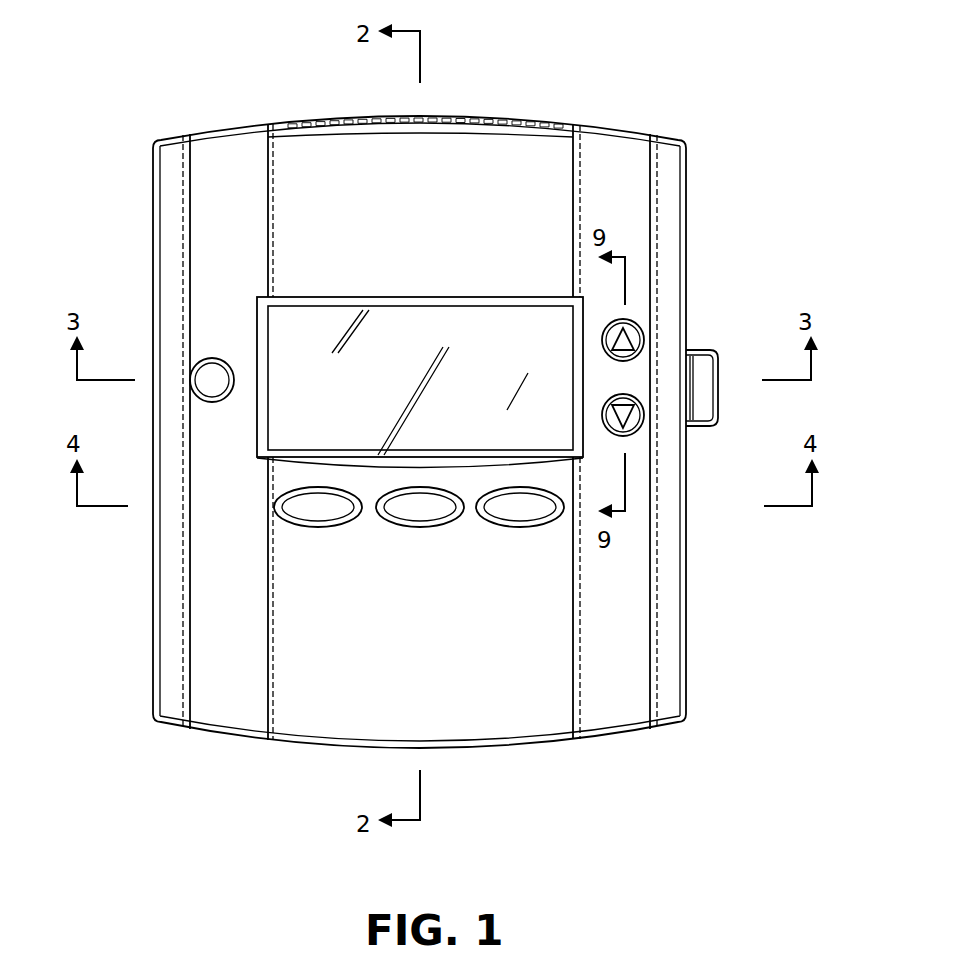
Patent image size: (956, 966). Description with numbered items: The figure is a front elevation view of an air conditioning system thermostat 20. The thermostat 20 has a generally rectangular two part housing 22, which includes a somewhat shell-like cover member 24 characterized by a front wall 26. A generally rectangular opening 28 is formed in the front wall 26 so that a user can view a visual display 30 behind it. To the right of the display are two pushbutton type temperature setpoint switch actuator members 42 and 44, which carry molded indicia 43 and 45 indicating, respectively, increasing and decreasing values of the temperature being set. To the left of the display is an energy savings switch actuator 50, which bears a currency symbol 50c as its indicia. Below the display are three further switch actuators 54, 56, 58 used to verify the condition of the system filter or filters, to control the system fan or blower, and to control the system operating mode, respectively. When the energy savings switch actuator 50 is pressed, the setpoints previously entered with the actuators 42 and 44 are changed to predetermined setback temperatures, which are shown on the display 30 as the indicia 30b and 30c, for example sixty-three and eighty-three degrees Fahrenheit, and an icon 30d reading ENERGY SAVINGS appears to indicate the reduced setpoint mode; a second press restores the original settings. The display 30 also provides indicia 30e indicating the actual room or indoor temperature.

The thermostat 20 is at (710, 153).
The housing 22 is at (635, 731).
The cover member 24 is at (239, 706).
The front wall 26 is at (620, 658).
The opening 28 is at (440, 320).
The visual display 30 is at (395, 332).
The setback temperature indicia 30b is at (507, 353).
The setback temperature indicia 30c is at (518, 425).
The energy savings icon 30d is at (372, 416).
The room temperature indicia 30e is at (310, 352).
The switch actuator member 42 is at (641, 324).
The indicia 43 is at (636, 363).
The switch actuator member 44 is at (634, 436).
The indicia 45 is at (646, 392).
The energy savings switch actuator 50 is at (202, 398).
The currency symbol 50c is at (219, 365).
The switch actuator 54 is at (320, 527).
The switch actuator 56 is at (422, 527).
The switch actuator 58 is at (514, 527).